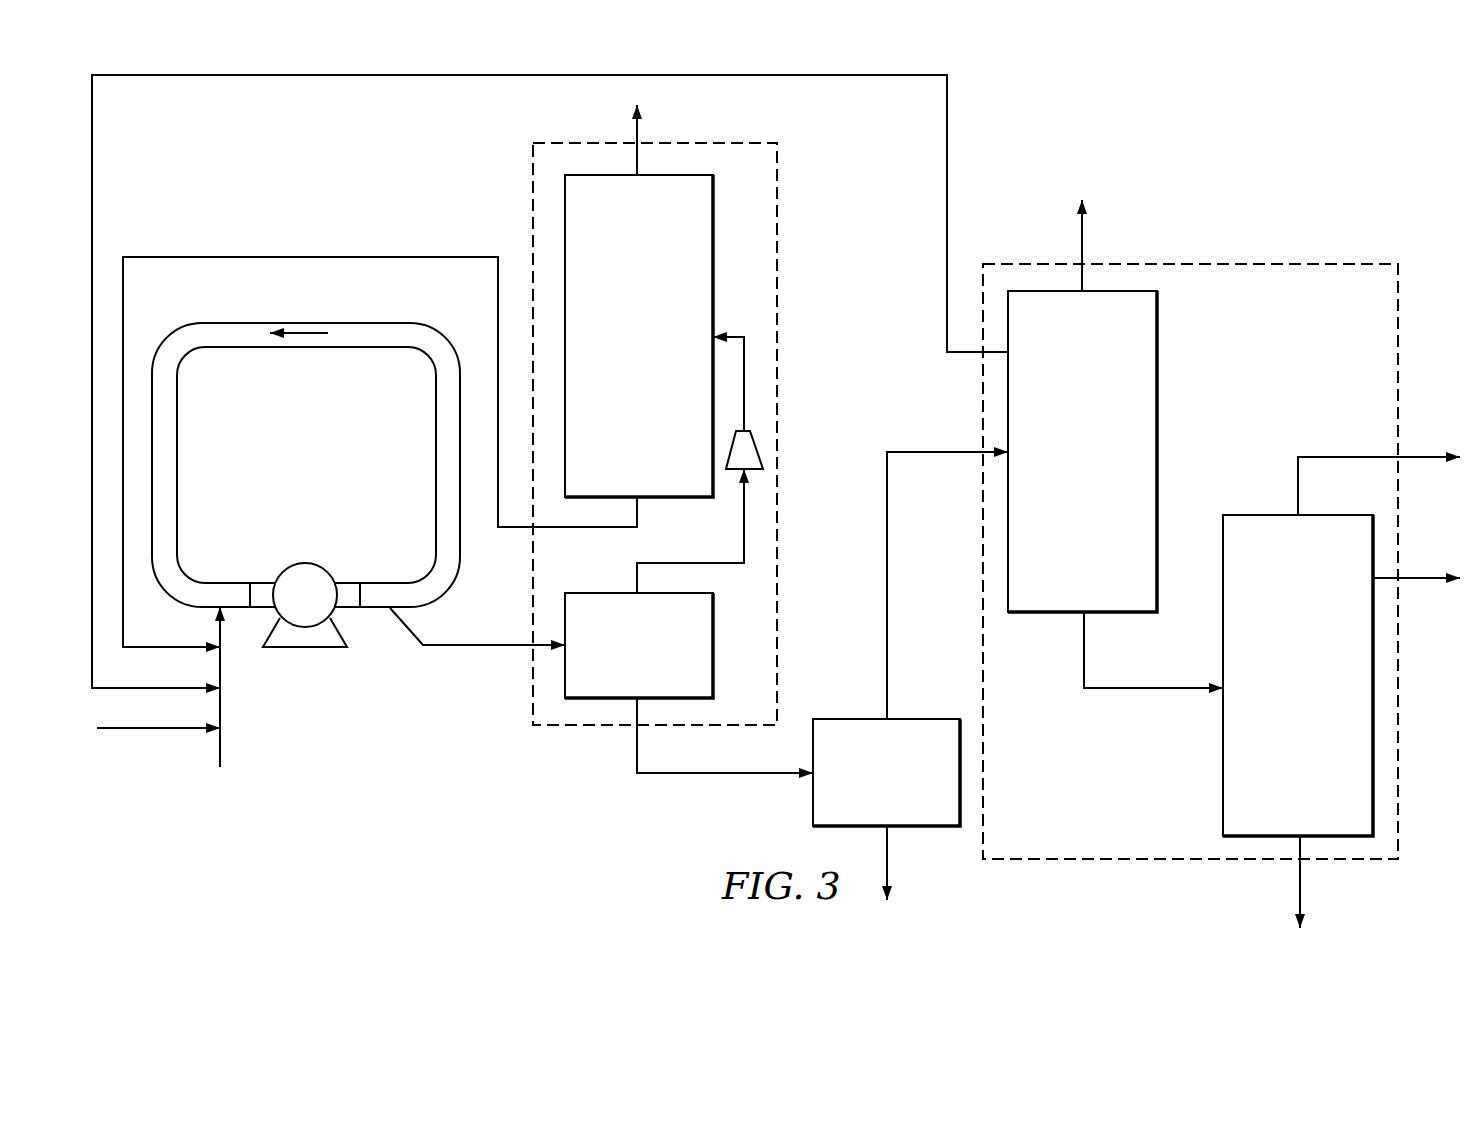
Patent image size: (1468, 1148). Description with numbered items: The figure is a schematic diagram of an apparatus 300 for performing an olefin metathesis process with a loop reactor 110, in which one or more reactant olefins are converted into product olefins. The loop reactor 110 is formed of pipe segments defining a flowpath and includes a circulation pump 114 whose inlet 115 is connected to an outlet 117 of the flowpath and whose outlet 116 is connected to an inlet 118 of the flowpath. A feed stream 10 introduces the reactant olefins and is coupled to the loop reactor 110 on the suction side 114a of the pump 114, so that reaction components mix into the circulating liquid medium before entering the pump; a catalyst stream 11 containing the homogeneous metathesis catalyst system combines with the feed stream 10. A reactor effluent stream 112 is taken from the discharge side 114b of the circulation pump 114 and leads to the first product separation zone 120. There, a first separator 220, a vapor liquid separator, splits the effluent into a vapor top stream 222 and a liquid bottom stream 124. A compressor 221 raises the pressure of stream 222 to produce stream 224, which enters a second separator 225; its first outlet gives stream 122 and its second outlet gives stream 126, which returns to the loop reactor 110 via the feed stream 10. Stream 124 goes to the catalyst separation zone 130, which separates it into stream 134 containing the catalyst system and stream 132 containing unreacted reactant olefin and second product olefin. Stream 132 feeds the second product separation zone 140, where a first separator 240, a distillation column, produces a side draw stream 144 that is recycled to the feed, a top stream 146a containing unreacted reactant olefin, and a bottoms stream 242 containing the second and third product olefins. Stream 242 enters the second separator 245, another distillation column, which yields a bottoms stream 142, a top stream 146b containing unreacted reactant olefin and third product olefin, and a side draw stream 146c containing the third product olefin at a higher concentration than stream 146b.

The apparatus 300 is at (1205, 137).
The stream 144 is at (947, 118).
The stream 126 is at (372, 257).
The first product separation zone 120 is at (533, 172).
The stream 122 is at (637, 155).
The second separator 225 is at (658, 351).
The stream 224 is at (744, 363).
The compressor 221 is at (755, 440).
The stream 222 is at (668, 560).
The first separator 220 is at (658, 658).
The stream 124 is at (707, 775).
The catalyst separation zone 130 is at (908, 785).
The stream 132 is at (887, 592).
The stream 134 is at (887, 848).
The second product separation zone 140 is at (1298, 263).
The stream 146a is at (1082, 240).
The first separator 240 is at (1103, 466).
The stream 146b is at (1298, 478).
The second separator 245 is at (1319, 688).
The stream 146c is at (1425, 582).
The stream 242 is at (1140, 688).
The stream 142 is at (1300, 880).
The loop reactor 110 is at (436, 452).
The outlet 117 is at (240, 575).
The inlet 115 is at (264, 580).
The outlet 116 is at (352, 580).
The inlet 118 is at (370, 575).
The circulation pump 114 is at (305, 650).
The suction side 114a is at (253, 612).
The discharge side 114b is at (358, 612).
The feed stream 10 is at (220, 688).
The catalyst stream 11 is at (155, 728).
The reactor effluent stream 112 is at (448, 645).